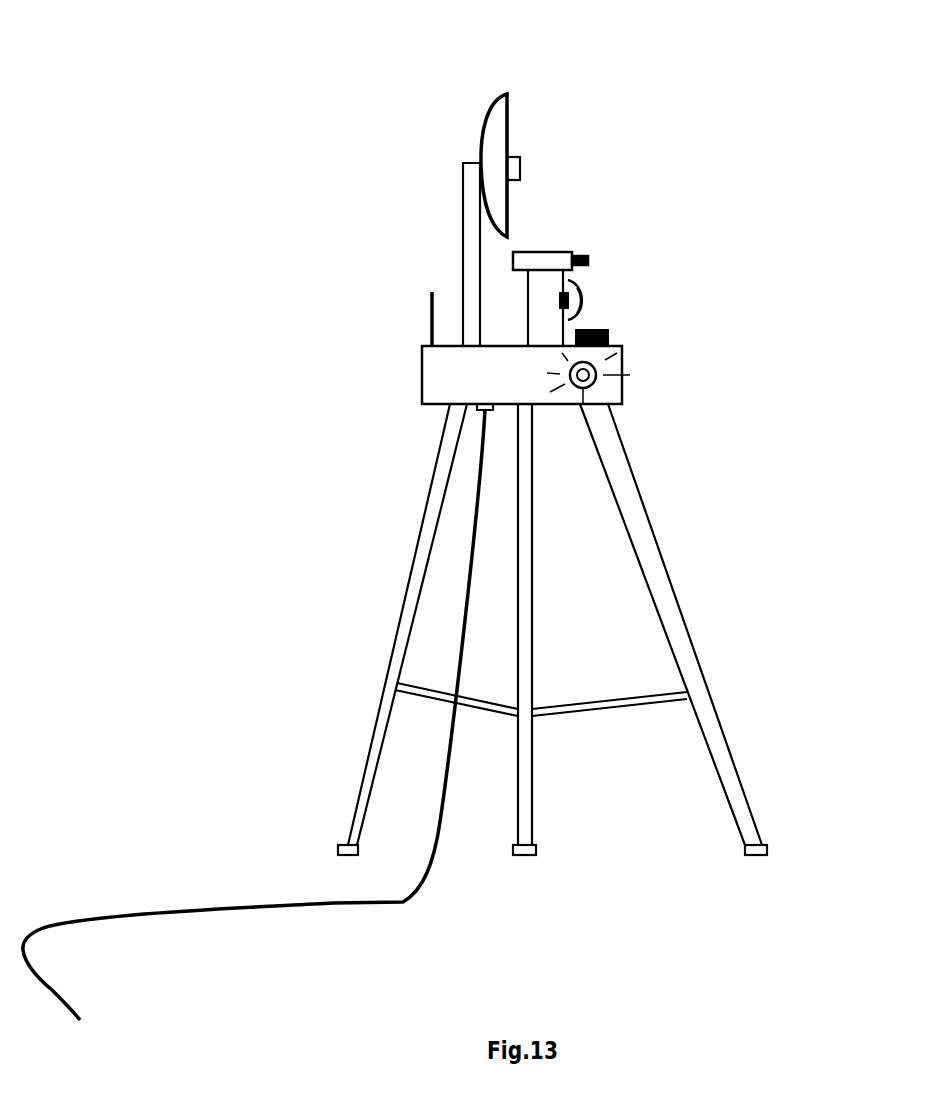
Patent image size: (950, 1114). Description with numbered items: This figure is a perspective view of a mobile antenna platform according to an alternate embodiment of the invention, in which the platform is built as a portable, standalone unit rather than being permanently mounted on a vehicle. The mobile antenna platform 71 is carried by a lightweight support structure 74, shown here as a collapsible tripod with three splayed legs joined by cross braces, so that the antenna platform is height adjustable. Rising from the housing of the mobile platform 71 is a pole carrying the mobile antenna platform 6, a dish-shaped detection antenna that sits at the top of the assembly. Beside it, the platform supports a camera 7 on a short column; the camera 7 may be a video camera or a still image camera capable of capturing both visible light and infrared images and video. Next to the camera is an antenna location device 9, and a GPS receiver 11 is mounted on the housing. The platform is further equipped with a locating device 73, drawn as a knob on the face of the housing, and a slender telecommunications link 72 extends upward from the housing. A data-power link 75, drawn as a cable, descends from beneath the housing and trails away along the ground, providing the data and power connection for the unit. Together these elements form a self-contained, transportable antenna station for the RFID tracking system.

The mobile antenna platform 6 is at (495, 152).
The camera 7 is at (537, 258).
The antenna location device 9 is at (582, 293).
The GPS receiver 11 is at (608, 334).
The mobile antenna platform 71 is at (455, 378).
The telecommunications link 72 is at (420, 293).
The locating device 73 is at (600, 388).
The lightweight support structure 74 is at (382, 720).
The data-power link 75 is at (280, 903).